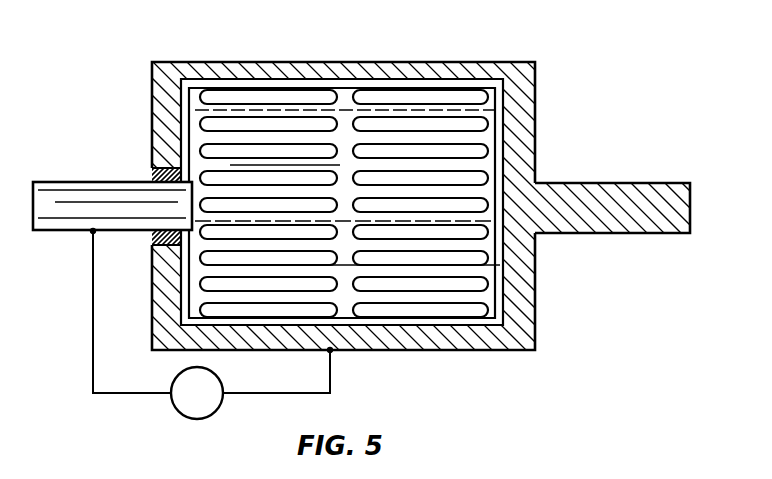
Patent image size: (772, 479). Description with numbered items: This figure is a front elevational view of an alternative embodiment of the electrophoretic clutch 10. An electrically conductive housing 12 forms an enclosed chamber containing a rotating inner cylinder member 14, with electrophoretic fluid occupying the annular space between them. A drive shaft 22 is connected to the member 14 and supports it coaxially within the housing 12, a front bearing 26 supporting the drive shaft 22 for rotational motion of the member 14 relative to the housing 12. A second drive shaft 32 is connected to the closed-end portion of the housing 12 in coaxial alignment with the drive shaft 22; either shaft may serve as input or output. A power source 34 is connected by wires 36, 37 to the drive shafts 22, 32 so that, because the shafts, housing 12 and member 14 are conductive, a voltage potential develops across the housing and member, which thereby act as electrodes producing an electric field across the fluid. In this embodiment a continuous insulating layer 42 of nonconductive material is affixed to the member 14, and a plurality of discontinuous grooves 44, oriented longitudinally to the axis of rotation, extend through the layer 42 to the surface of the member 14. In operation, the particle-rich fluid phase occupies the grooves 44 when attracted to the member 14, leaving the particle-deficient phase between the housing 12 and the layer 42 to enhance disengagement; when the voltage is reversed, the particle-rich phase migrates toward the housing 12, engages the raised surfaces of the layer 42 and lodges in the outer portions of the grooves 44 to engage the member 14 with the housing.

The clutch 10 is at (567, 66).
The housing 12 is at (470, 72).
The member 14 is at (183, 112).
The drive shaft 22 is at (67, 182).
The front bearing 26 is at (151, 176).
The drive shaft 32 is at (621, 183).
The power source 34 is at (218, 409).
The wire 36 is at (93, 309).
The wire 37 is at (330, 378).
The insulating layer 42 is at (344, 110).
The grooves 44 is at (263, 128).